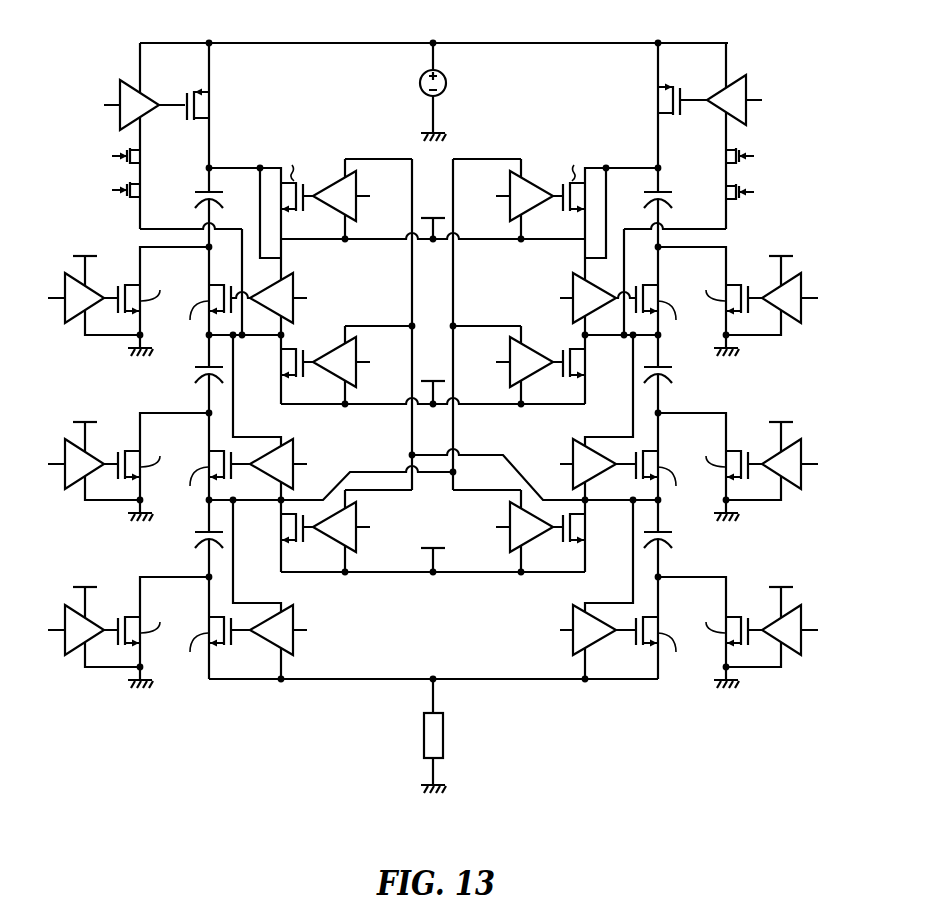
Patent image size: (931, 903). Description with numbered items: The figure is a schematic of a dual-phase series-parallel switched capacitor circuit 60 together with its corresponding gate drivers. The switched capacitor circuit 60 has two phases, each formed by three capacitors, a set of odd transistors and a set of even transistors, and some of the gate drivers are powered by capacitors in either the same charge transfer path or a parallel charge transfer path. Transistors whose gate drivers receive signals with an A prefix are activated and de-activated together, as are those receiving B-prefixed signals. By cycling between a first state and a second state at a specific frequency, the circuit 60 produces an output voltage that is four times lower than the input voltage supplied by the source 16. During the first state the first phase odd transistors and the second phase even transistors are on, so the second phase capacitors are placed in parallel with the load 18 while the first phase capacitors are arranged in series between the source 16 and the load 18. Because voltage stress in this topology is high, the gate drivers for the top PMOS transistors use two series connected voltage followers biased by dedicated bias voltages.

The dual-phase series-parallel switched capacitor circuit 60 is at (68, 50).
The source 16 is at (420, 82).
The load 18 is at (422, 734).